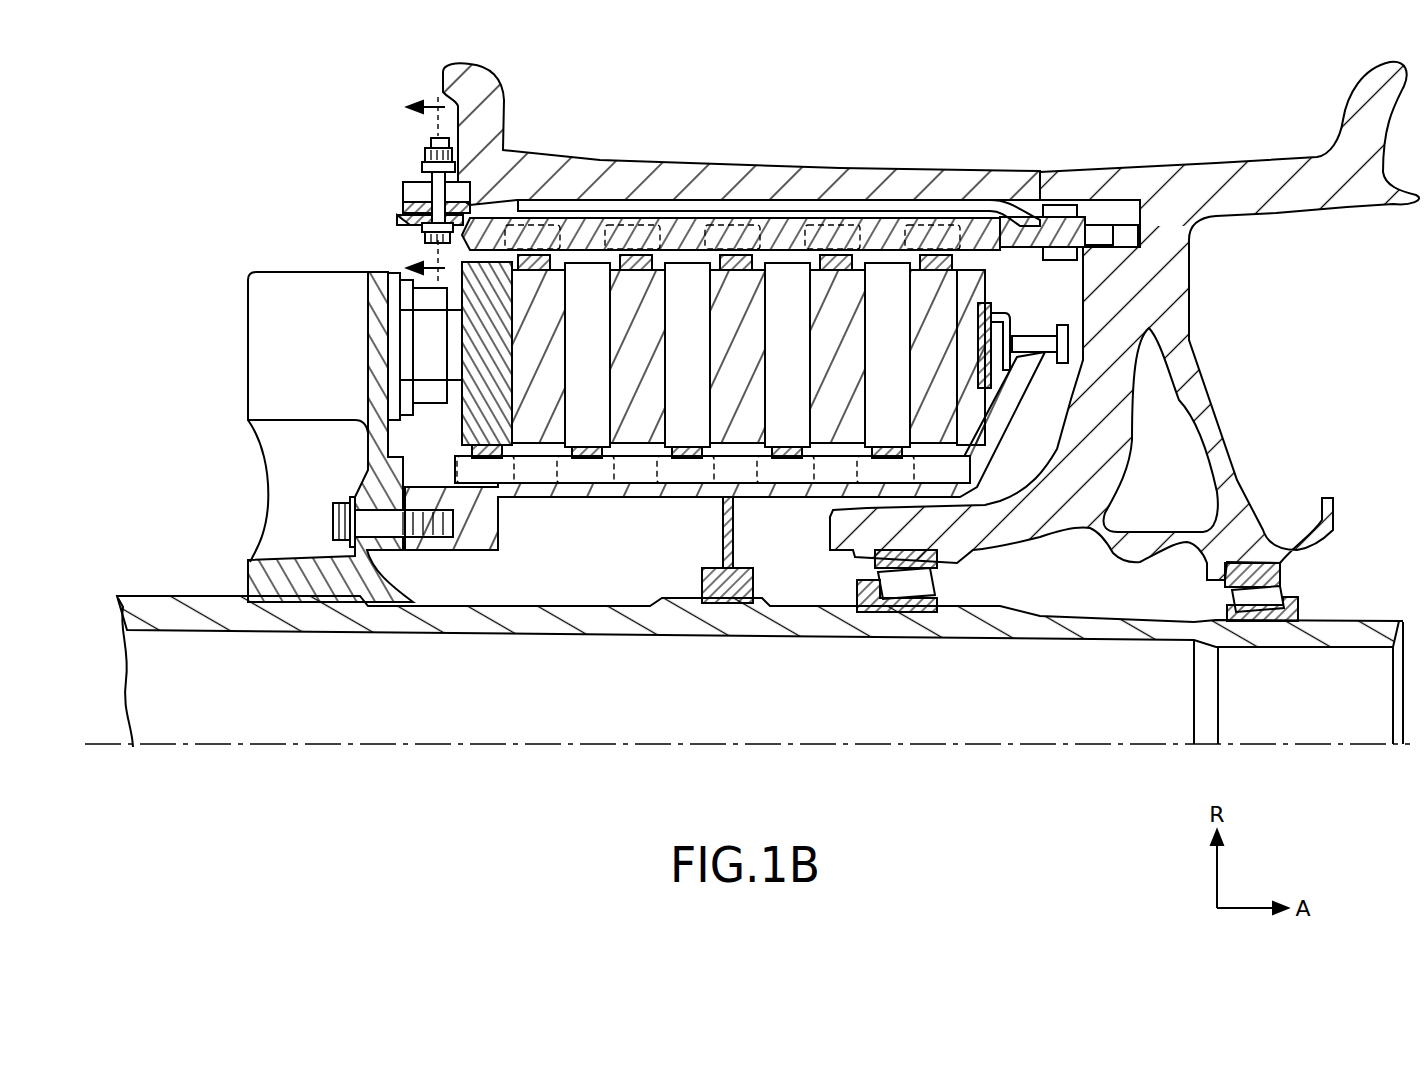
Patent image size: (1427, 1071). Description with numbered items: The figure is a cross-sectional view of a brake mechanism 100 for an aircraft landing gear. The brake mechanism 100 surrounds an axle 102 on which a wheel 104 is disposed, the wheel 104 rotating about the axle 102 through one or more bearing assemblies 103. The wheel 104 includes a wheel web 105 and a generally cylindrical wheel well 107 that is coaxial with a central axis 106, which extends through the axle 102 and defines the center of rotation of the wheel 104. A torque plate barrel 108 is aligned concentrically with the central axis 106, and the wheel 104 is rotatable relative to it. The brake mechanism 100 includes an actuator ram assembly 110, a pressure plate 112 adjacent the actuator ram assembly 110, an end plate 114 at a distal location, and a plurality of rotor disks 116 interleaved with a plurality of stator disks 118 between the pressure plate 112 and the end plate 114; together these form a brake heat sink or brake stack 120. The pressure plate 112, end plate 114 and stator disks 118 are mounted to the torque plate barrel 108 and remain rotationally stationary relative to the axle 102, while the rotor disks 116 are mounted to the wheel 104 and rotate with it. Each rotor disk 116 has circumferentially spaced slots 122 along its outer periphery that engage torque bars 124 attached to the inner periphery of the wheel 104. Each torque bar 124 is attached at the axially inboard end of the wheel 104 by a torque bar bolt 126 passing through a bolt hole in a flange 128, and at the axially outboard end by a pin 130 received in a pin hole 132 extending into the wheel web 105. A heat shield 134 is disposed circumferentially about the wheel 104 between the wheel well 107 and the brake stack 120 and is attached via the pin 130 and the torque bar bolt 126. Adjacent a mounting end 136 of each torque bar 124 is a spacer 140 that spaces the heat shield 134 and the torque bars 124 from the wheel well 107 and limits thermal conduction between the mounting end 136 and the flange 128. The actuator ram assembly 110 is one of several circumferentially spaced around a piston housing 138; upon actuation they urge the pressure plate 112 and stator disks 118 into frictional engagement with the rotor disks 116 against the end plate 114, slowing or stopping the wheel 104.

The brake mechanism 100 is at (245, 133).
The axle 102 is at (1053, 632).
The bearing assemblies 103 is at (1272, 589).
The wheel 104 is at (1153, 273).
The wheel web 105 is at (1177, 244).
The central axis 106 is at (1005, 745).
The wheel well 107 is at (747, 177).
The torque plate barrel 108 is at (566, 510).
The actuator ram assembly 110 is at (312, 241).
The pressure plate 112 is at (485, 262).
The end plate 114 is at (982, 284).
The rotor disks 116 is at (540, 283).
The stator disks 118 is at (688, 270).
The brake stack 120 is at (883, 250).
The slots 122 is at (612, 243).
The torque bars 124 is at (1013, 232).
The torque bar bolt 126 is at (430, 140).
The flange 128 is at (412, 183).
The pin 130 is at (1087, 237).
The pin hole 132 is at (1117, 222).
The heat shield 134 is at (843, 272).
The mounting end 136 is at (397, 220).
The piston housing 138 is at (256, 327).
The spacer 140 is at (403, 203).